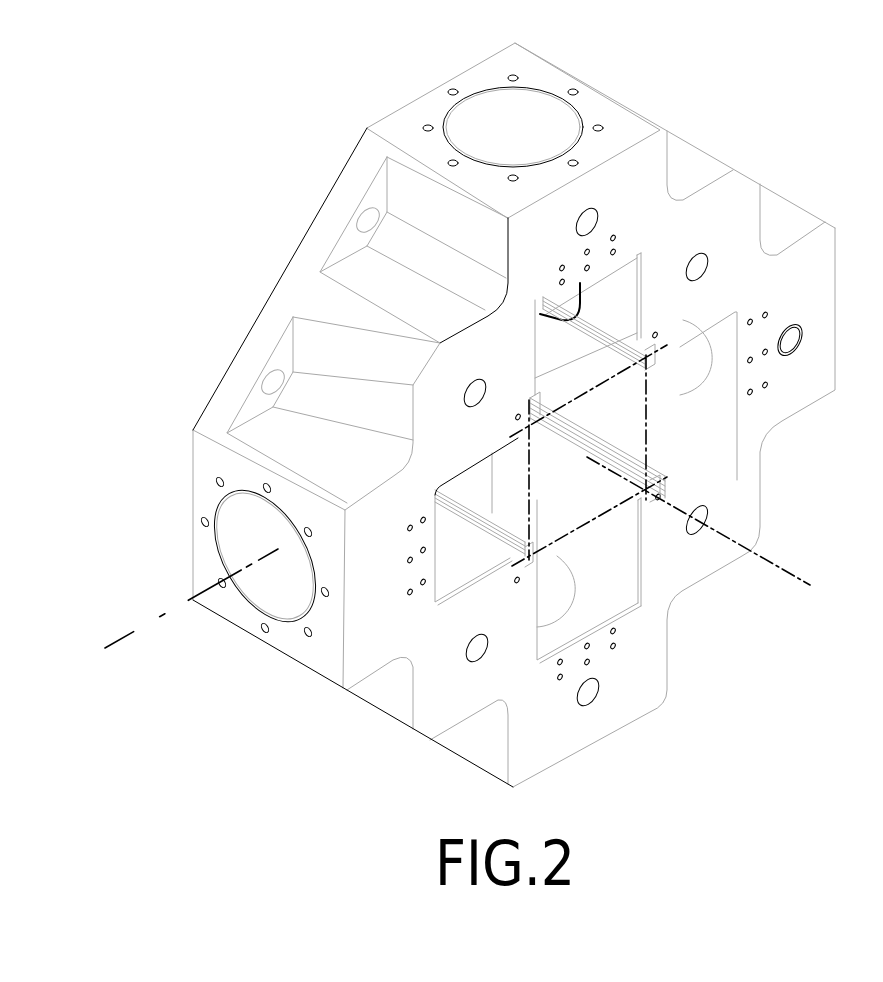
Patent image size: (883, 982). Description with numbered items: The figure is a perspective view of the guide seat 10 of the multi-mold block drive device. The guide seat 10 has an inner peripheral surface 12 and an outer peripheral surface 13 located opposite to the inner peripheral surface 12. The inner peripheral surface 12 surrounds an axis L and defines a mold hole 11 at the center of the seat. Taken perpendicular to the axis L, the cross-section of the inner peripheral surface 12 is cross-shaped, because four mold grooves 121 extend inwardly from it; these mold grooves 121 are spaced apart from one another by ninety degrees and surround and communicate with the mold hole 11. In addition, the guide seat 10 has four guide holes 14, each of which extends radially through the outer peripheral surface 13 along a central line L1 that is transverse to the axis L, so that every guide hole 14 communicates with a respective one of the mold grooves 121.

The guide seat 10 is at (520, 415).
The mold hole 11 is at (648, 519).
The inner peripheral surface 12 is at (431, 250).
The outer peripheral surface 13 is at (305, 333).
The guide hole 14 is at (343, 339).
The mold groove 121 is at (496, 432).
The axis L is at (712, 532).
The central line L1 is at (171, 612).